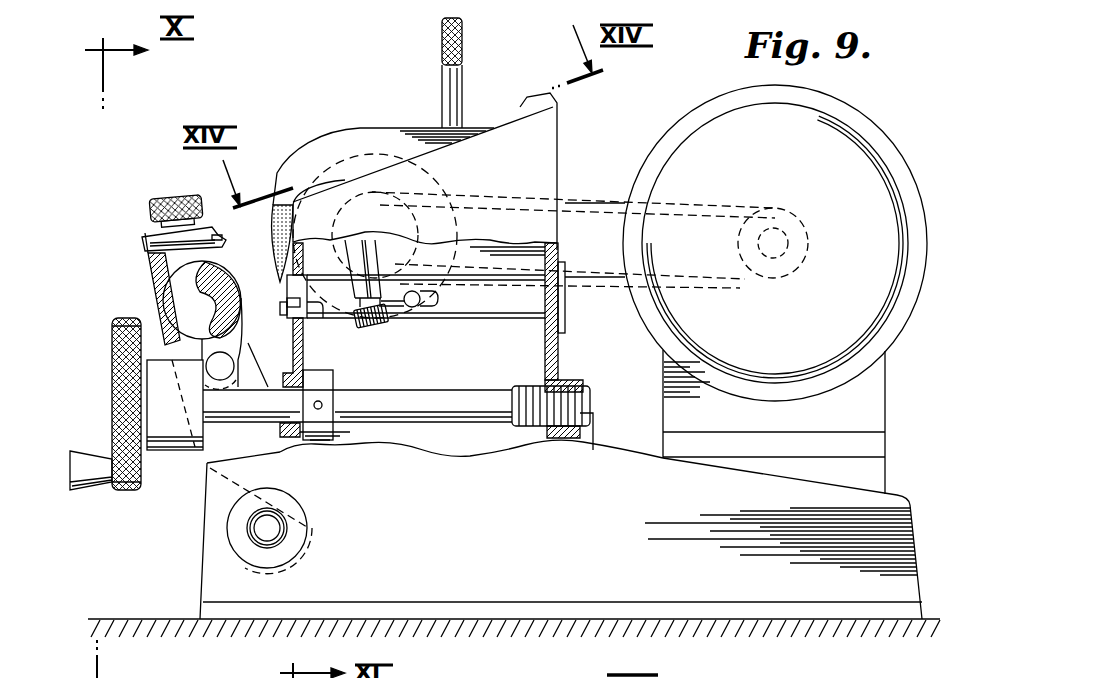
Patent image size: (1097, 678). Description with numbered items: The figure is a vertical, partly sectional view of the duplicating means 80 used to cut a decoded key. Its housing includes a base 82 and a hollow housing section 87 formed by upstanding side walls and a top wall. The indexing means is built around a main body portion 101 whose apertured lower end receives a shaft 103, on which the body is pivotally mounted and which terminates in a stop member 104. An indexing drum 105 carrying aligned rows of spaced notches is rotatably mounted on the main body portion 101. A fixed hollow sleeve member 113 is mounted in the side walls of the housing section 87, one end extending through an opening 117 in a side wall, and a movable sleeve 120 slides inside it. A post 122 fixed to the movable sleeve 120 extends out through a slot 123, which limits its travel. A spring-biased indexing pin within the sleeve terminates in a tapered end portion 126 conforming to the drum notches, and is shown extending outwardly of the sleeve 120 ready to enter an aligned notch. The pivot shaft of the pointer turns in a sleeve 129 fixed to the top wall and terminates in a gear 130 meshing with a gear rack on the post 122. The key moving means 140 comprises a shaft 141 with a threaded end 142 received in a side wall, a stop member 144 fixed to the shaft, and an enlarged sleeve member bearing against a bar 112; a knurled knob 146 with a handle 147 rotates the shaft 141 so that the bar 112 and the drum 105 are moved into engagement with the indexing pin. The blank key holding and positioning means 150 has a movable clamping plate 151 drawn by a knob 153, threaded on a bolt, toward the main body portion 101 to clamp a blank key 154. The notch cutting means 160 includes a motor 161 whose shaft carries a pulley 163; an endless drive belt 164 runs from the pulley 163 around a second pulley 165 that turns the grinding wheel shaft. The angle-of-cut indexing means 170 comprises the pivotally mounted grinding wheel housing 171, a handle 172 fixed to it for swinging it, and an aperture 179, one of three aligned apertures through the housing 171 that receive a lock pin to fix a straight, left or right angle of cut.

The duplicating means 80 is at (590, 177).
The base 82 is at (690, 582).
The housing section 87 is at (466, 286).
The main body portion 101 is at (214, 457).
The shaft 103 is at (271, 533).
The stop member 104 is at (247, 550).
The indexing drum 105 is at (172, 302).
The bar 112 is at (214, 368).
The fixed hollow sleeve member 113 is at (528, 318).
The opening 117 is at (306, 305).
The movable sleeve 120 is at (258, 300).
The post 122 is at (388, 297).
The slot 123 is at (440, 302).
The tapered end portion 126 is at (262, 293).
The sleeve 129 is at (365, 232).
The gear 130 is at (365, 328).
The key moving means 140 is at (103, 442).
The shaft 141 is at (468, 412).
The threaded end 142 is at (582, 413).
The stop member 144 is at (335, 438).
The knurled knob 146 is at (120, 335).
The handle 147 is at (85, 460).
The blank key holding and positioning means 150 is at (158, 190).
The movable clamping plate 151 is at (142, 237).
The knob 153 is at (158, 210).
The blank key 154 is at (222, 240).
The notch cutting means 160 is at (343, 150).
The motor 161 is at (840, 112).
The pulley 163 is at (808, 233).
The endless drive belt 164 is at (606, 203).
The pulley 165 is at (280, 232).
The angle-of-cut indexing means 170 is at (385, 125).
The housing 171 is at (472, 128).
The handle 172 is at (440, 73).
The aperture 179 is at (463, 35).